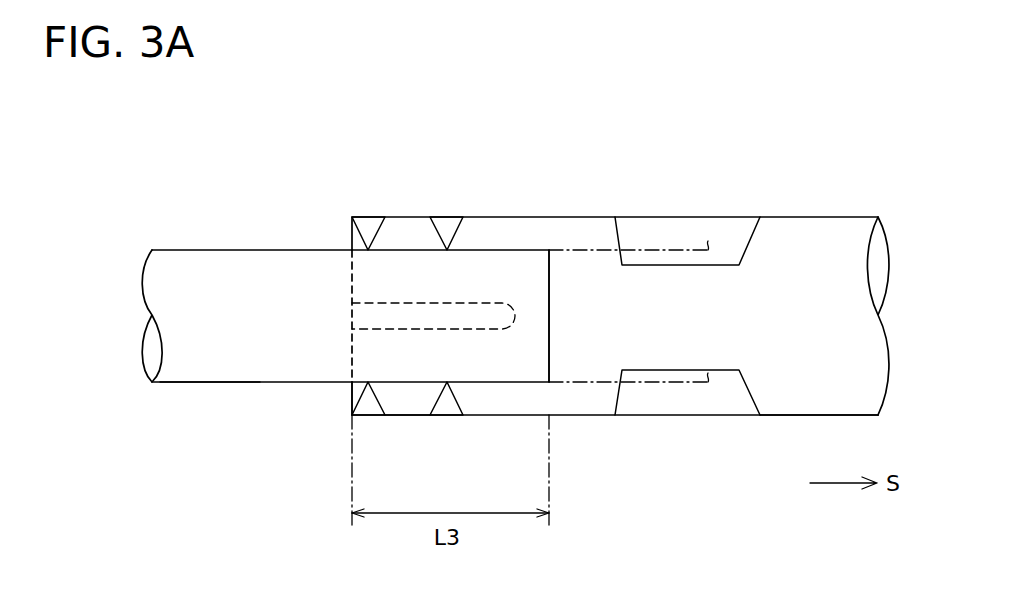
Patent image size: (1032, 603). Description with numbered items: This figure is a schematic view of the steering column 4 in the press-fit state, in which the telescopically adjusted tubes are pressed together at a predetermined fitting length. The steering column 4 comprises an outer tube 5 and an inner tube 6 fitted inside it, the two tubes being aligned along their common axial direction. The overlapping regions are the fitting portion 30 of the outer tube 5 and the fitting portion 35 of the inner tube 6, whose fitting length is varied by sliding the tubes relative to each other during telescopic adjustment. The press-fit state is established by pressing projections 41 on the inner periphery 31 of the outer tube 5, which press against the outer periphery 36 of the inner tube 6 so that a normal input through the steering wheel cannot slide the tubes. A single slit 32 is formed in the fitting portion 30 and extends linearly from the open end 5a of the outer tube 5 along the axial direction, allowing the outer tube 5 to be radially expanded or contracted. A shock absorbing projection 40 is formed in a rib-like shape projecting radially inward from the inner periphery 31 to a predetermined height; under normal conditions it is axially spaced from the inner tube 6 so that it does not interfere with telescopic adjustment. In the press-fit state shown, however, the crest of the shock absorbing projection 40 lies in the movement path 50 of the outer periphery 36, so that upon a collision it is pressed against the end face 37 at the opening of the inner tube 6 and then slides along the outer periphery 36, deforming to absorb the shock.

The steering column 4 is at (780, 148).
The outer tube 5 is at (807, 217).
The open end 5a is at (352, 392).
The inner tube 6 is at (187, 250).
The fitting portion 30 is at (422, 415).
The inner periphery 31 is at (795, 415).
The slit 32 is at (362, 306).
The fitting portion 35 is at (417, 415).
The outer periphery 36 is at (208, 383).
The end face 37 is at (549, 358).
The shock absorbing projection 40 is at (697, 227).
The pressing projections 41 is at (365, 214).
The movement path 50 is at (568, 250).